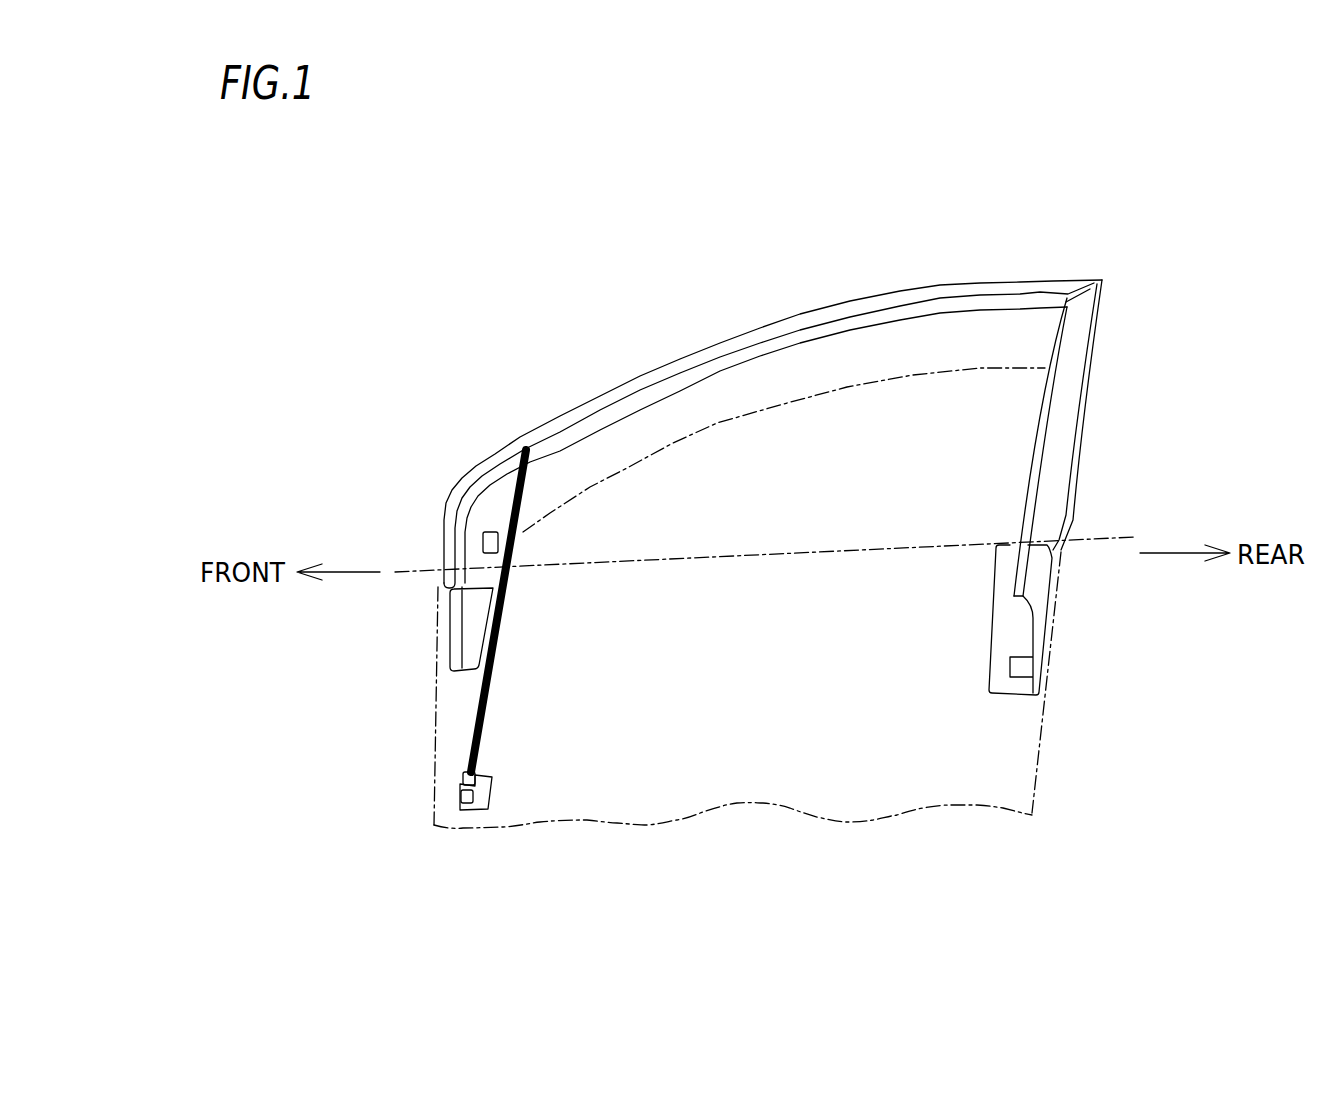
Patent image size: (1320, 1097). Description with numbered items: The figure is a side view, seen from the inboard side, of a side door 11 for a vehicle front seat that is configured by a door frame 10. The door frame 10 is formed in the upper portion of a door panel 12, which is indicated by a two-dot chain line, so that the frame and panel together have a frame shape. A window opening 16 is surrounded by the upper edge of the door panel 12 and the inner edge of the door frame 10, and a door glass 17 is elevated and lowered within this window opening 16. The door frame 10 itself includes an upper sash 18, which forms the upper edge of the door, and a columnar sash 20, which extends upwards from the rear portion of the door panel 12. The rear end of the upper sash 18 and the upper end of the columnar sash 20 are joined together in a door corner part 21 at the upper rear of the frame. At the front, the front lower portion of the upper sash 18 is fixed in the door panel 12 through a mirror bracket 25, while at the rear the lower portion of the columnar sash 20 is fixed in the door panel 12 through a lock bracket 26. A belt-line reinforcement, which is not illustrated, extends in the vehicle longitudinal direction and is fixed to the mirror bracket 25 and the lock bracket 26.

The door frame 10 is at (1016, 282).
The side door 11 is at (602, 332).
The door panel 12 is at (1038, 757).
The window opening 16 is at (898, 336).
The door glass 17 is at (750, 404).
The upper sash 18 is at (768, 316).
The columnar sash 20 is at (1082, 355).
The door corner part 21 is at (1104, 306).
The mirror bracket 25 is at (467, 632).
The lock bracket 26 is at (1040, 587).